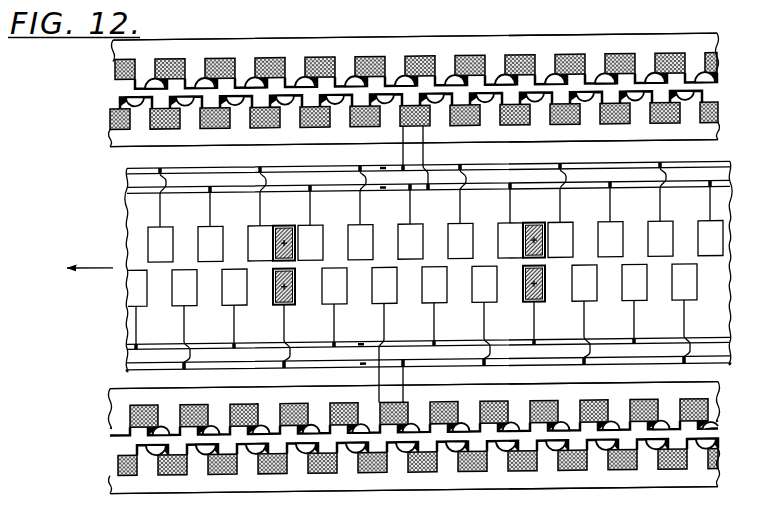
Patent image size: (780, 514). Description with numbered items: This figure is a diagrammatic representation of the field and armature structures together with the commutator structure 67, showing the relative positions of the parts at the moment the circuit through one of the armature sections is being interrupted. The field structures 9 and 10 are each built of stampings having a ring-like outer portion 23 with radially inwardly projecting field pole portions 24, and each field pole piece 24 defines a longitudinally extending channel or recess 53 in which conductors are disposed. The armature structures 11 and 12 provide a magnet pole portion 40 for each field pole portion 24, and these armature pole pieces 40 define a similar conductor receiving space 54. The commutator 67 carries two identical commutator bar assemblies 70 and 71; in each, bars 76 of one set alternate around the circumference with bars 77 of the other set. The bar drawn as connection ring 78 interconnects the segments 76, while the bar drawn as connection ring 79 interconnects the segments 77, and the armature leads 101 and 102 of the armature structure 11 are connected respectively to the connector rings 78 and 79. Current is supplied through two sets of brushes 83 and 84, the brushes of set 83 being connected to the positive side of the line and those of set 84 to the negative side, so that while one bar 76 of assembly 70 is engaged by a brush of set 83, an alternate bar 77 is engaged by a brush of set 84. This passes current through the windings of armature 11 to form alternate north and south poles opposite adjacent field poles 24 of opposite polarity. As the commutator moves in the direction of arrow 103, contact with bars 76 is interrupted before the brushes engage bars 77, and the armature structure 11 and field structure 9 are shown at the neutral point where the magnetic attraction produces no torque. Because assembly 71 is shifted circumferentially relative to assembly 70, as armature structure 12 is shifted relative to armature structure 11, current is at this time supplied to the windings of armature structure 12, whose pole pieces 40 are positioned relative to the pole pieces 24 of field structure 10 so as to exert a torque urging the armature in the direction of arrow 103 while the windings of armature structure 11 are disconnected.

The field structure 9 is at (717, 45).
The field structure 10 is at (712, 478).
The armature structure 11 is at (722, 132).
The armature structure 12 is at (717, 396).
The ring-like outer portion 23 is at (677, 46).
The field pole portion 24 is at (700, 73).
The armature magnet pole portion 40 is at (693, 103).
The channel or recess 53 is at (622, 55).
The conductor receiving space 54 is at (675, 125).
The commutator 67 is at (125, 312).
The commutator bar assembly 70 is at (145, 237).
The commutator bar assembly 71 is at (132, 294).
The commutator bar 76 is at (165, 230).
The commutator bar 77 is at (215, 233).
The connection ring 78 is at (183, 167).
The connection ring 79 is at (207, 188).
The brush set 83 is at (272, 293).
The brush set 84 is at (525, 288).
The armature lead 101 is at (402, 153).
The armature lead 102 is at (429, 153).
The arrow 103 is at (98, 268).